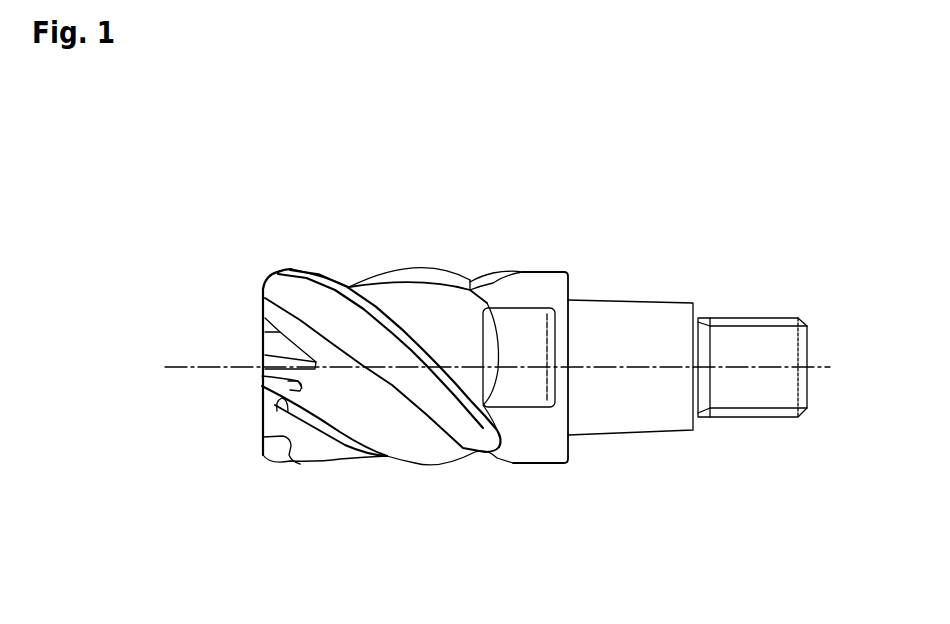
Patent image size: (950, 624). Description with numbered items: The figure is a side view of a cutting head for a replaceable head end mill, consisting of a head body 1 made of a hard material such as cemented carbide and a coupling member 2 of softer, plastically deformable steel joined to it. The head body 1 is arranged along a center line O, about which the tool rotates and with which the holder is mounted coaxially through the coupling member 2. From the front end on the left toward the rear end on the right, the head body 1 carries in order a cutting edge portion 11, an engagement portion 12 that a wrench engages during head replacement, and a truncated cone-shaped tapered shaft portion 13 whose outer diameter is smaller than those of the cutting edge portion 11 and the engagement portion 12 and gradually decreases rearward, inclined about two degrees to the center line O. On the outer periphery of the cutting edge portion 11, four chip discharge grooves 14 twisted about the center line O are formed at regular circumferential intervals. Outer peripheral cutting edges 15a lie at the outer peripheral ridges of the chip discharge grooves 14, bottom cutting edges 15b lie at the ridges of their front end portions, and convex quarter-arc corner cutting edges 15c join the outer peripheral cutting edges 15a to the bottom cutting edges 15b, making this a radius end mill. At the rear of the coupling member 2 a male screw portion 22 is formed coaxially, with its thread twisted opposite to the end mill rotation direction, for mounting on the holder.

The head body 1 is at (528, 231).
The coupling member 2 is at (756, 308).
The male screw portion 22 is at (752, 367).
The cutting edge portion 11 is at (383, 249).
The engagement portion 12 is at (506, 261).
The tapered shaft portion 13 is at (613, 261).
The chip discharge groove 14 is at (437, 321).
The outer peripheral cutting edge 15a is at (380, 277).
The bottom cutting edge 15b is at (260, 328).
The corner cutting edge 15c is at (278, 278).
The center line O is at (177, 368).